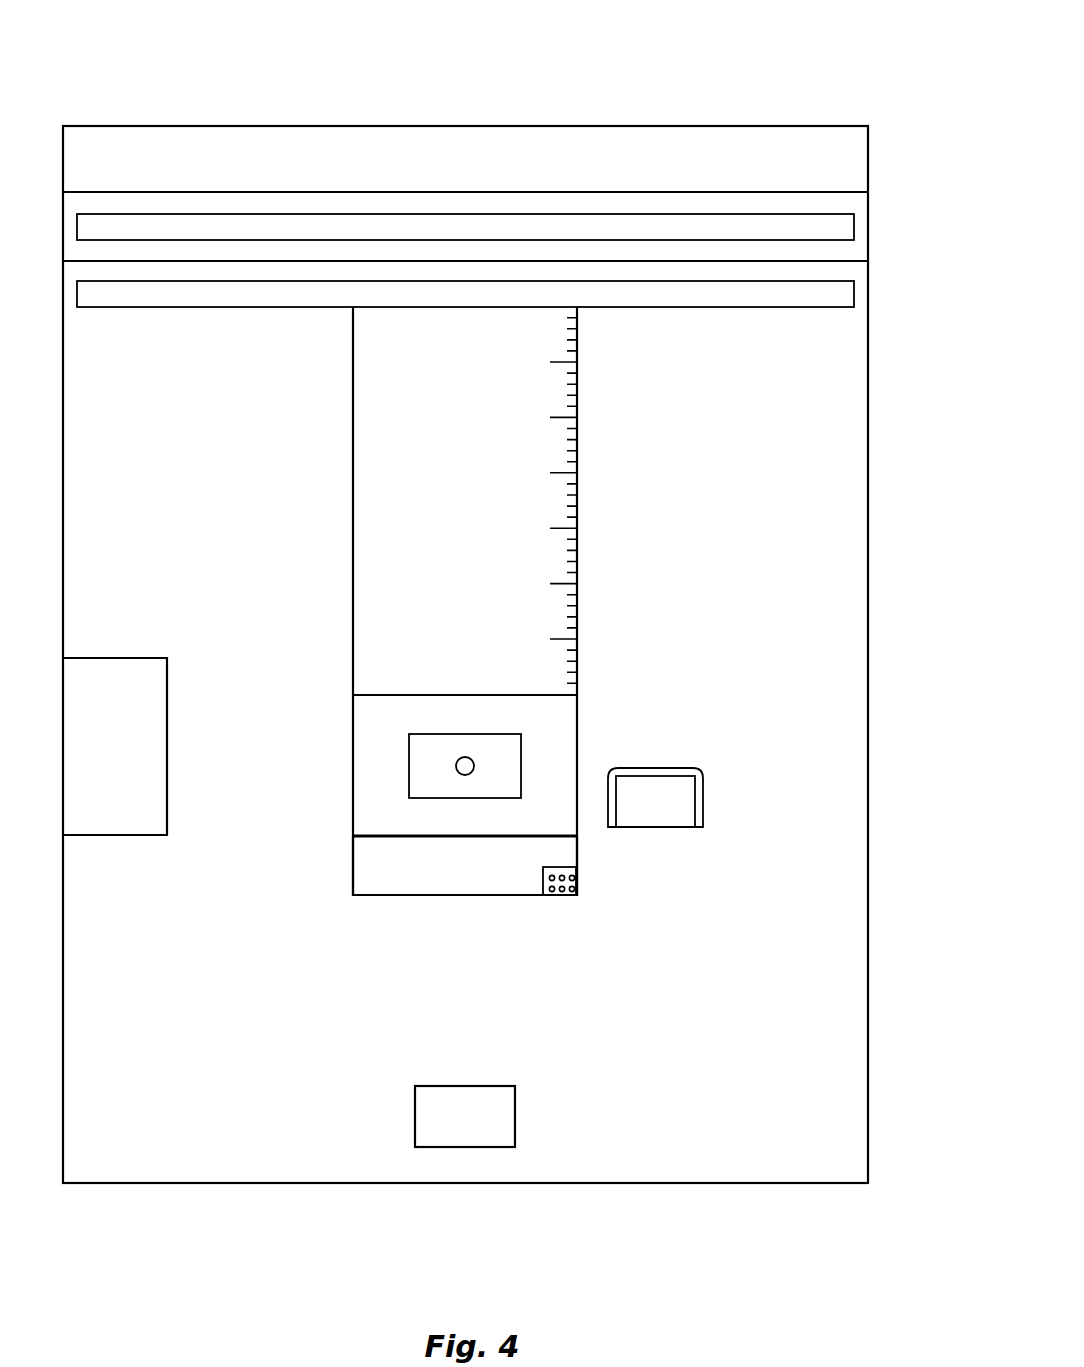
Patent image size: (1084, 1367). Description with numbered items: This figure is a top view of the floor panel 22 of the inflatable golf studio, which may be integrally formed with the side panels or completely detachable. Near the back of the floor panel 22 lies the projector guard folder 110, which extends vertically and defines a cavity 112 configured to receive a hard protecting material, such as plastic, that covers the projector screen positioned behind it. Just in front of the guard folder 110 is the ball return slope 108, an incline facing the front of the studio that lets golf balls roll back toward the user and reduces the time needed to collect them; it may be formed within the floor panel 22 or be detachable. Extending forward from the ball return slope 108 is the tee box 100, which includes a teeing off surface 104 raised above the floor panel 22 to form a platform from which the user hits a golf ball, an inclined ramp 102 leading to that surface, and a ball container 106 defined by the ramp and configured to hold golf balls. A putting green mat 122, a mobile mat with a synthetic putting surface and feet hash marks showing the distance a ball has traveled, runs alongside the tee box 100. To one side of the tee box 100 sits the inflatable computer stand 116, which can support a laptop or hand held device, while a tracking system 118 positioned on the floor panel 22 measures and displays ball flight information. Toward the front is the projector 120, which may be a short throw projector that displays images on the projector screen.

The floor panel 22 is at (847, 78).
The tee box 100 is at (588, 732).
The ramp 102 is at (478, 896).
The teeing off surface 104 is at (353, 820).
The ball container 106 is at (578, 887).
The ball return slope 108 is at (854, 300).
The projector guard folder 110 is at (837, 192).
The cavity 112 is at (854, 231).
The inflatable computer stand 116 is at (167, 711).
The tracking system 118 is at (703, 793).
The projector 120 is at (472, 1148).
The putting green mat 122 is at (578, 490).